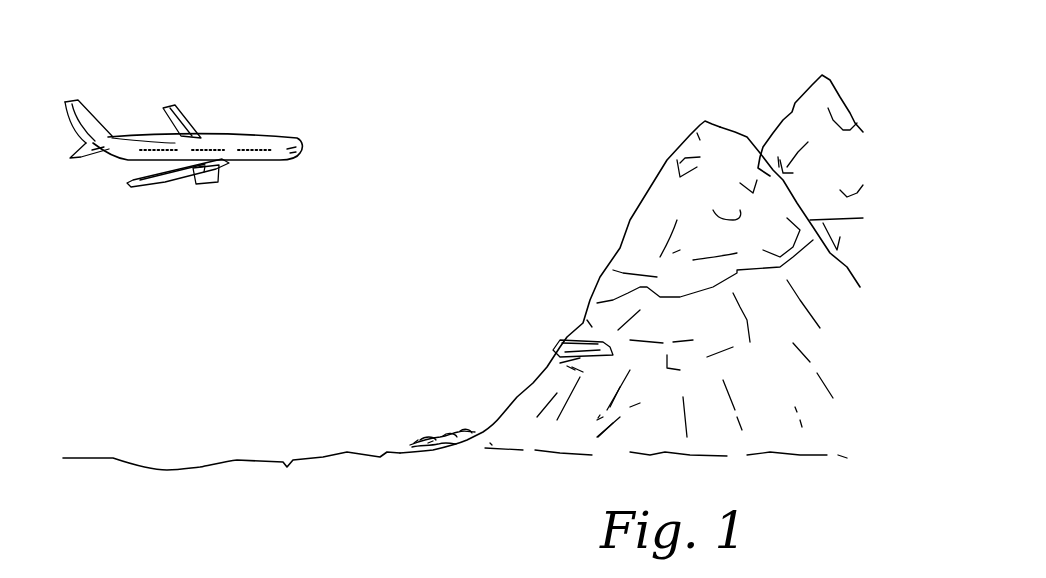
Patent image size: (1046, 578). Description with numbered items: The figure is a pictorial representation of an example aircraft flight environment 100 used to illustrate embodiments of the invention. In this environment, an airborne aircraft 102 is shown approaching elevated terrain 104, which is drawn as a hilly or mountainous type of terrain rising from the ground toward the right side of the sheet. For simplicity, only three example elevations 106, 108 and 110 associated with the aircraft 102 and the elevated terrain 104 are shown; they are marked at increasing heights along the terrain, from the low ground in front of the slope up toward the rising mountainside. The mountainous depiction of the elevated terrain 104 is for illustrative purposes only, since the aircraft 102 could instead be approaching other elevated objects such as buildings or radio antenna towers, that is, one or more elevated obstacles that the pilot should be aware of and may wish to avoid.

The aircraft flight environment 100 is at (675, 62).
The aircraft 102 is at (258, 138).
The elevated terrain 104 is at (718, 127).
The elevation 106 is at (241, 478).
The elevation 108 is at (532, 408).
The elevation 110 is at (600, 300).